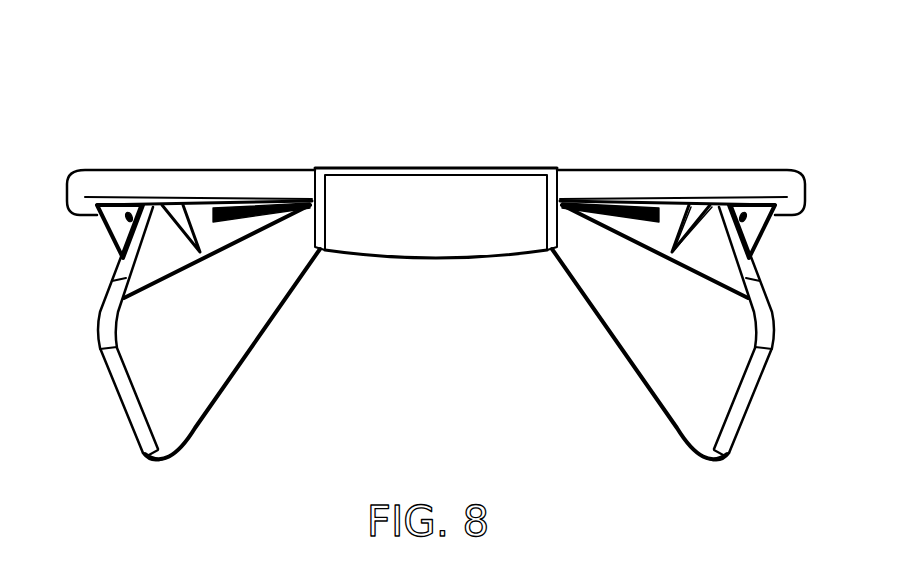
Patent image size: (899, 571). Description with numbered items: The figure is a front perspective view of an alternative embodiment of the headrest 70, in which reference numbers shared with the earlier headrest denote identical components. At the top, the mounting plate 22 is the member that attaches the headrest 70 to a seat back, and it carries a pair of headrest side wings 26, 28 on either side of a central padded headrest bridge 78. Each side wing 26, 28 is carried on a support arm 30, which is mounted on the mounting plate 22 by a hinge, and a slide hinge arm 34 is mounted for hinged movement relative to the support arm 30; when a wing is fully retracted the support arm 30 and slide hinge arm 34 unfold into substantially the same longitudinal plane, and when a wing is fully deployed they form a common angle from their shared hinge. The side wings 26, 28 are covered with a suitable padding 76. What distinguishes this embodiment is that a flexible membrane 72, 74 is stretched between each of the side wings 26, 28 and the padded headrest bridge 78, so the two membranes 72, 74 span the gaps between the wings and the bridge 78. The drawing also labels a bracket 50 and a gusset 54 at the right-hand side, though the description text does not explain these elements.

The headrest 70 is at (293, 78).
The mounting plate 22 is at (283, 172).
The slide hinge arm 34 is at (207, 196).
The padded headrest bridge 78 is at (438, 190).
The support arm 30 is at (108, 233).
The right mounting bracket 50 is at (767, 228).
The padding 76 is at (148, 218).
The right gusset plate 54 is at (673, 212).
The headrest side wing 26 is at (137, 282).
The headrest side wing 28 is at (727, 277).
The flexible membrane 72 is at (222, 343).
The flexible membrane 74 is at (677, 367).